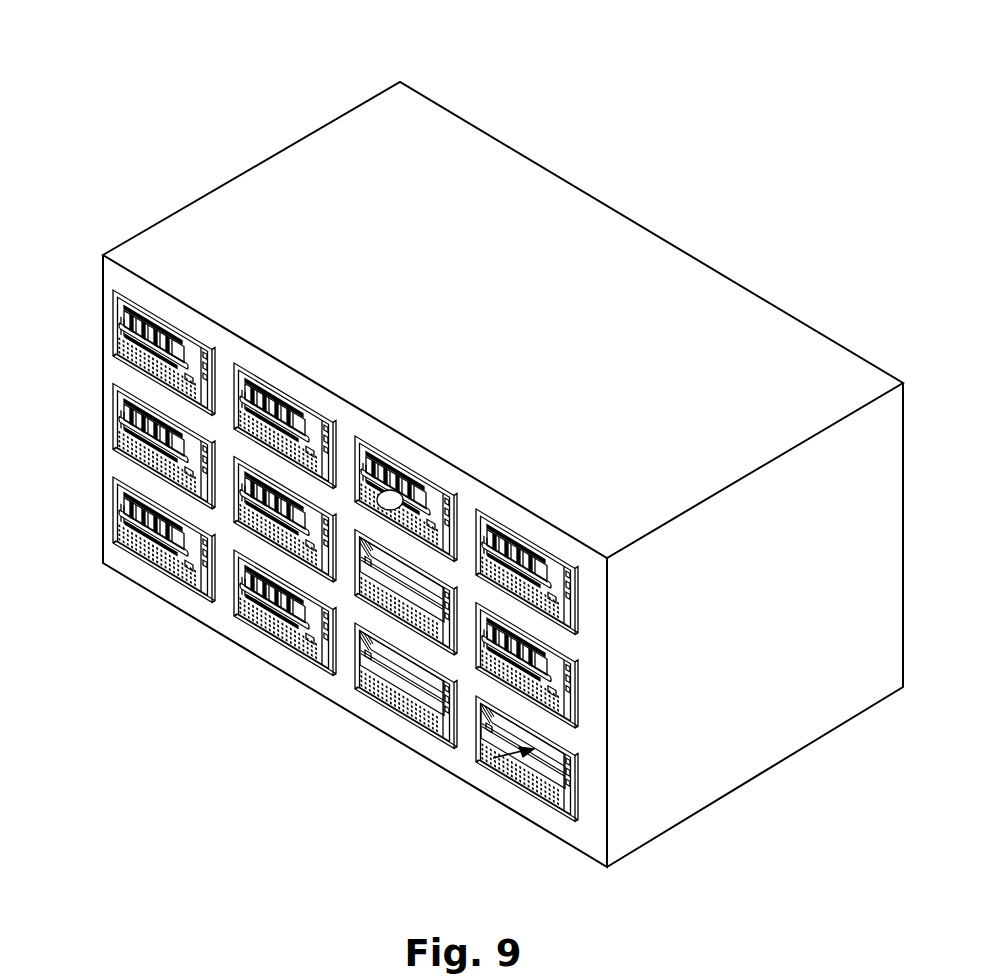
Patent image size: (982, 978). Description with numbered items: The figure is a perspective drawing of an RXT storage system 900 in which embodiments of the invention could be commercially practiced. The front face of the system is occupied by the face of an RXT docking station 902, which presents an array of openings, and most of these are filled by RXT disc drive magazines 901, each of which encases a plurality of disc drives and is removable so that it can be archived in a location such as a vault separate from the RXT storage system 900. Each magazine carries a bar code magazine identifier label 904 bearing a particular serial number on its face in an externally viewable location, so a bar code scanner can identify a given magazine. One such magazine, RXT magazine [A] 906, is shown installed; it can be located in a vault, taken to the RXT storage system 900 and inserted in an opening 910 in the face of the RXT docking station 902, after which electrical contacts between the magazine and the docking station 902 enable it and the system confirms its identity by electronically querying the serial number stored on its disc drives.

The RXT storage system 900 is at (321, 58).
The RXT disc drive magazine 901 is at (118, 315).
The RXT docking station 902 is at (160, 315).
The bar code magazine identifier label 904 is at (318, 413).
The RXT magazine [A] 906 is at (365, 448).
The opening 910 is at (475, 762).